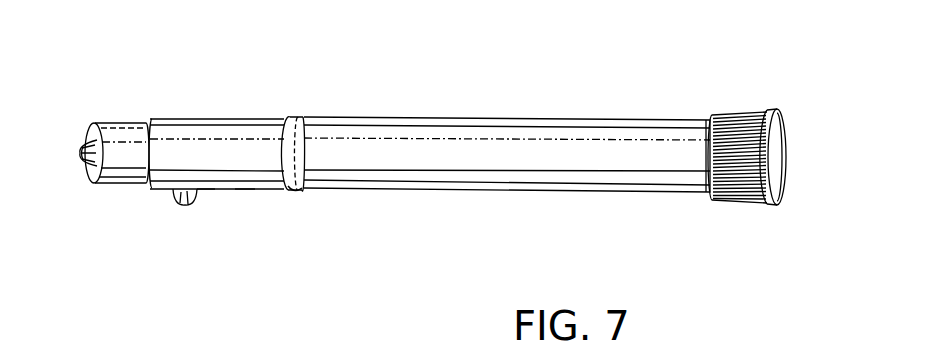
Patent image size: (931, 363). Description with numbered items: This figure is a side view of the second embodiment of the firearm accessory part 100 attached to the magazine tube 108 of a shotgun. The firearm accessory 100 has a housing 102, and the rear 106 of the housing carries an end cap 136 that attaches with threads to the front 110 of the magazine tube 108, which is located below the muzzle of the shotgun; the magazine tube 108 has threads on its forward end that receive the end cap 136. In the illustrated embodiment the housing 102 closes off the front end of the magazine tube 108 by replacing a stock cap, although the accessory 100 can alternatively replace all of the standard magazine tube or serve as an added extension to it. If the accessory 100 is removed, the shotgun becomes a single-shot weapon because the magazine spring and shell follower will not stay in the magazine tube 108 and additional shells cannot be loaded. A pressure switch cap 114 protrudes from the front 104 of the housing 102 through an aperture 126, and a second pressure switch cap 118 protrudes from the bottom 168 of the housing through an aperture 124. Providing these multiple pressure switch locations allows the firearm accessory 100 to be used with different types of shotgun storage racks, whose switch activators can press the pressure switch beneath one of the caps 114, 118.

The firearm accessory part 100 is at (157, 108).
The housing 102 is at (228, 125).
The front of the housing 104 is at (95, 124).
The rear of the housing 106 is at (300, 192).
The magazine tube 108 is at (485, 119).
The front of the magazine tube 110 is at (309, 117).
The pressure switch cap 114 is at (84, 149).
The pressure switch cap 118 is at (177, 202).
The aperture 124 is at (198, 190).
The aperture 126 is at (95, 184).
The end cap 136 is at (771, 205).
The bottom of the housing 168 is at (244, 191).